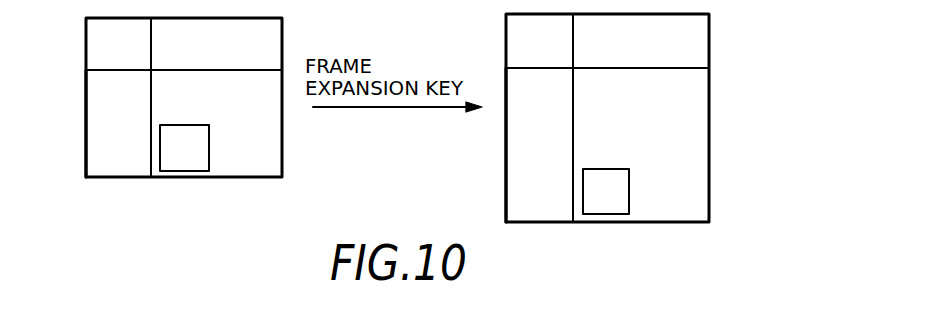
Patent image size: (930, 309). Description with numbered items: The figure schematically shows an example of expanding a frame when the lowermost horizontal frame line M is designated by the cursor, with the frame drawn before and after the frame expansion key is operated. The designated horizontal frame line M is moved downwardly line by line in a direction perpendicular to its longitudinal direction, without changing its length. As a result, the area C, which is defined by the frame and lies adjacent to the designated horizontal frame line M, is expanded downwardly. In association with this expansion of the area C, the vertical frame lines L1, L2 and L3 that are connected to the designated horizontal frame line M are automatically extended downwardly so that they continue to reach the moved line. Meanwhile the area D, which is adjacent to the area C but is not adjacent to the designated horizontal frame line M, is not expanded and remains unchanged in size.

The vertical frame line L1 is at (283, 133).
The vertical frame line L2 is at (150, 95).
The vertical frame line L3 is at (86, 154).
The area D is at (82, 16).
The area C is at (82, 73).
The lowermost horizontal frame line M is at (228, 181).